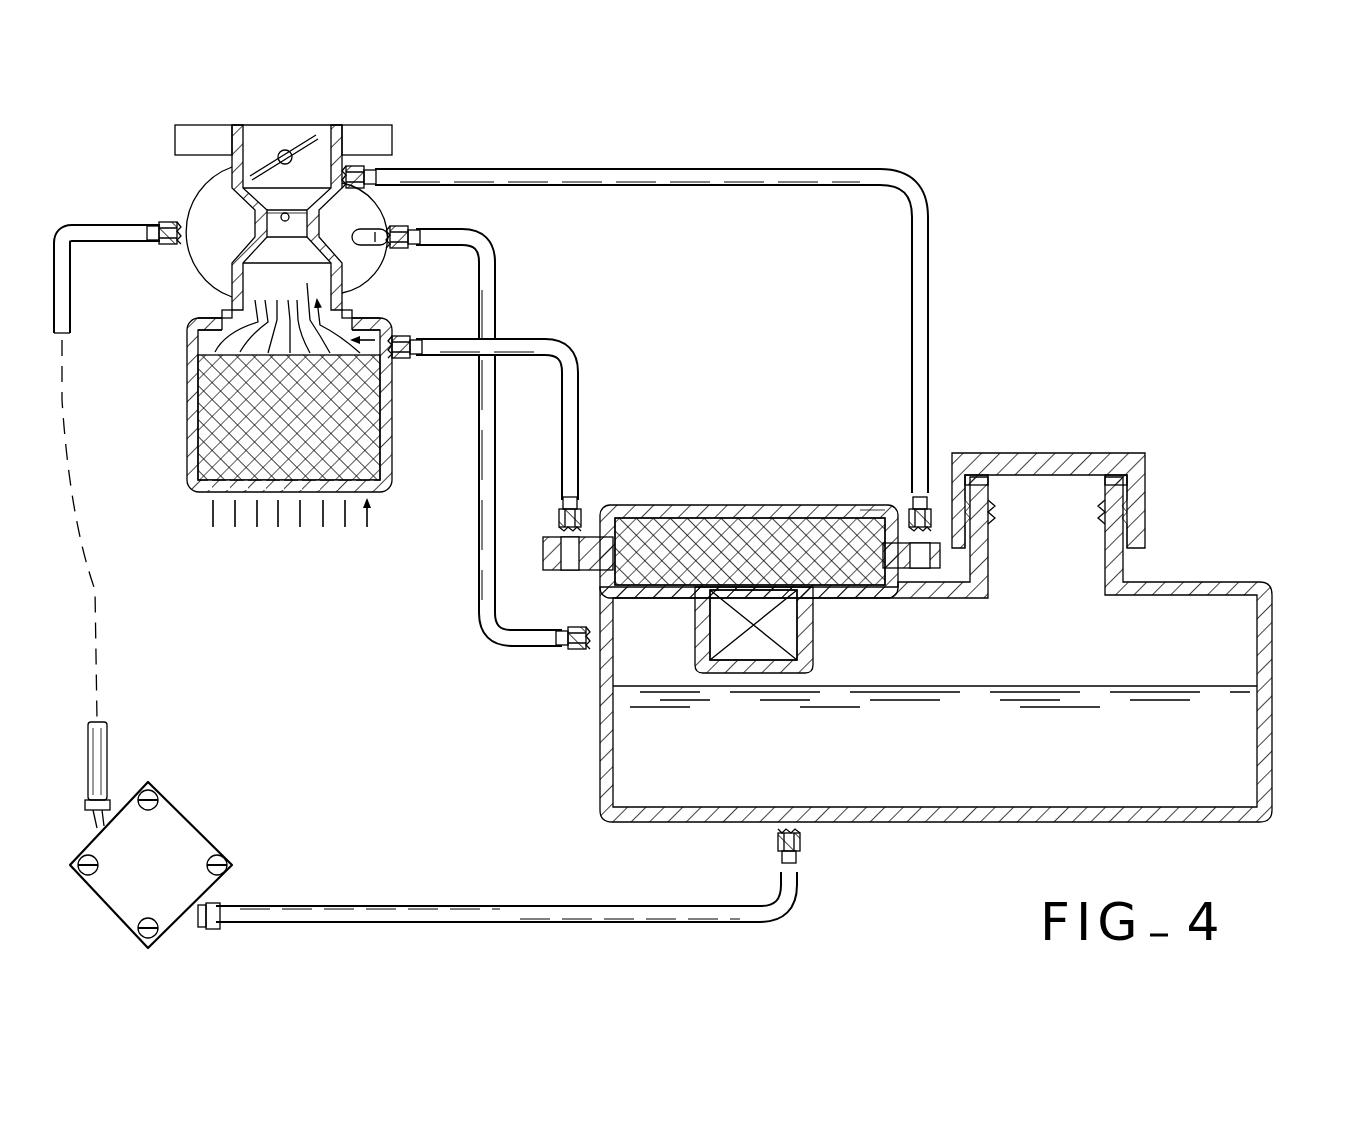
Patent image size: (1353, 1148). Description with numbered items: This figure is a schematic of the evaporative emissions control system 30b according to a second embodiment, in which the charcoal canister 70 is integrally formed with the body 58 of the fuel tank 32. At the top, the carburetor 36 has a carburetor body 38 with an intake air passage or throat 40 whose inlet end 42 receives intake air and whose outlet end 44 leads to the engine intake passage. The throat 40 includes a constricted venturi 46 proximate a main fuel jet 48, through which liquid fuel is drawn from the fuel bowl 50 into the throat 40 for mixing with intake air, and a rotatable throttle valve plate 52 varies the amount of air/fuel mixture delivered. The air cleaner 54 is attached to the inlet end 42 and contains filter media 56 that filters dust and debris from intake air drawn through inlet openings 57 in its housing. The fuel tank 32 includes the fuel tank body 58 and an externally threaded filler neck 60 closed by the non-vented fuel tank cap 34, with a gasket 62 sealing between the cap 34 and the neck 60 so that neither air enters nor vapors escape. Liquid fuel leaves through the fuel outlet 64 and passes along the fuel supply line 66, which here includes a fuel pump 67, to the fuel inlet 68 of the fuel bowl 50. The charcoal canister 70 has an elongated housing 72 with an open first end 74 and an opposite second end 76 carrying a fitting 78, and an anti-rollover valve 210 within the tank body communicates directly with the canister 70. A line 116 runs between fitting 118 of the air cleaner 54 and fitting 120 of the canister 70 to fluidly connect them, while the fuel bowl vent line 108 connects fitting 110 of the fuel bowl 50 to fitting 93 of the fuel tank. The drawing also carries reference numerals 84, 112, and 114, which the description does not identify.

The evaporative emissions control system 30b is at (1065, 153).
The fuel tank 32 is at (1244, 540).
The fuel tank cap 34 is at (1100, 457).
The carburetor 36 is at (403, 132).
The carburetor body 38 is at (200, 131).
The throat 40 is at (248, 142).
The inlet end 42 is at (238, 298).
The outlet end 44 is at (280, 122).
The venturi 46 is at (283, 221).
The main fuel jet 48 is at (270, 240).
The fuel bowl 50 is at (196, 232).
The throttle valve plate 52 is at (300, 138).
The air cleaner 54 is at (193, 358).
The filter media 56 is at (208, 398).
The inlet openings 57 is at (216, 494).
The fuel tank body 58 is at (600, 703).
The filler neck 60 is at (1118, 562).
The gasket 62 is at (1122, 470).
The fuel outlet 64 is at (773, 845).
The fuel supply line 66 is at (98, 565).
The fuel pump 67 is at (186, 806).
The fuel inlet 68 is at (170, 222).
The charcoal canister 70 is at (806, 500).
The elongated housing 72 is at (655, 508).
The open first end 74 is at (613, 498).
The second end 76 is at (865, 510).
The fitting 78 is at (908, 502).
The adsorbent material 84 is at (700, 528).
The fitting 93 is at (560, 650).
The fuel bowl vent line 108 is at (498, 263).
The fitting 110 is at (414, 226).
The vapor line 112 is at (815, 177).
The vapor line fitting 114 is at (368, 175).
The line 116 is at (548, 343).
The fitting 118 is at (408, 338).
The fitting 120 is at (560, 512).
The anti-rollover valve 210 is at (780, 624).